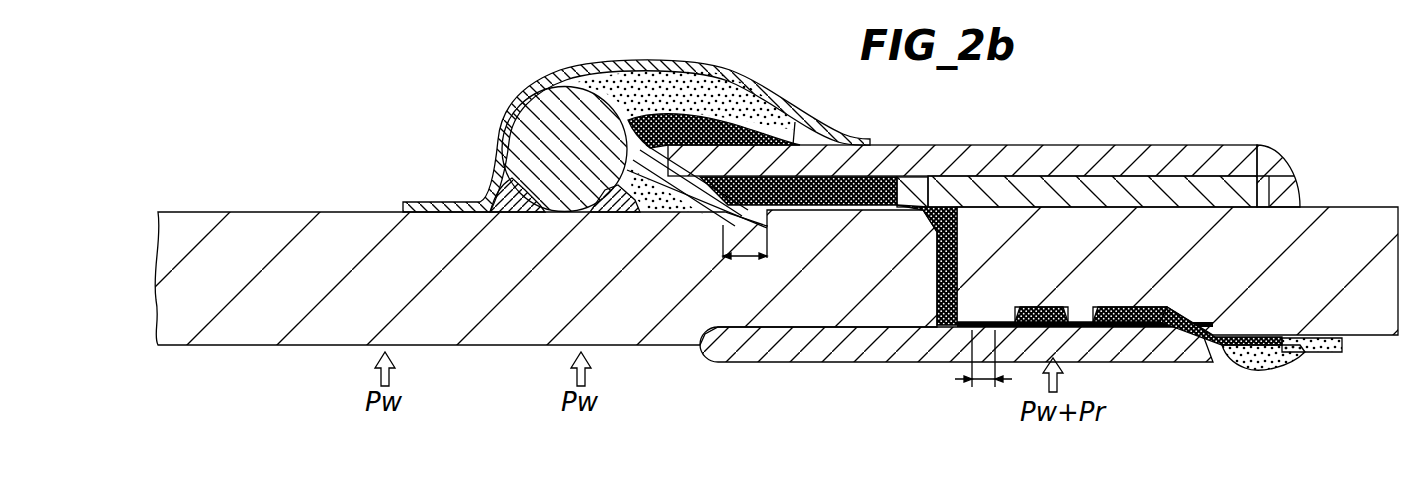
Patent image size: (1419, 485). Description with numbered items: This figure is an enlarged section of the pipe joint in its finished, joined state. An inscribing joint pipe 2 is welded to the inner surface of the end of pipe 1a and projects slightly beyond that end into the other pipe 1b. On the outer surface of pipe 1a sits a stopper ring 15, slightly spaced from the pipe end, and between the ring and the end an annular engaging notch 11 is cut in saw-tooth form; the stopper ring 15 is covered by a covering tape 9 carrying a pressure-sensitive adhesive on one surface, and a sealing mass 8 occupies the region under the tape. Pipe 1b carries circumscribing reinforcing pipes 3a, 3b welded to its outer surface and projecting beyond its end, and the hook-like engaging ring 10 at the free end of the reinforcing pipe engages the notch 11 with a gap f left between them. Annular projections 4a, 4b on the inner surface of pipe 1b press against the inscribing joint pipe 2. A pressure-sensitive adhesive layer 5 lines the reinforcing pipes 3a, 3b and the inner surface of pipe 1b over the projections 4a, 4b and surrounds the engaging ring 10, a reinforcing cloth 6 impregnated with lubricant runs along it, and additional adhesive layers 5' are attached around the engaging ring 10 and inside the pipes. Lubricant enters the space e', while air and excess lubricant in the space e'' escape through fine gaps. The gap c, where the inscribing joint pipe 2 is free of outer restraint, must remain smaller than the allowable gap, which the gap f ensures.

The pipe 1a is at (343, 212).
The pipe 1b is at (1350, 207).
The inscribing joint pipe 2 is at (820, 345).
The circumscribing reinforcing pipe 3a is at (1005, 160).
The circumscribing reinforcing pipe 3b is at (1070, 190).
The annular projection 4a is at (1005, 306).
The annular projection 4b is at (1093, 306).
The pressure-sensitive adhesive layer 5 is at (1263, 378).
The additional adhesive layer 5' is at (1323, 374).
The reinforcing cloth 6 is at (1137, 327).
The sealing resin 8 is at (750, 96).
The covering tape 9 is at (687, 72).
The engaging ring 10 is at (700, 214).
The annular engaging notch 11 is at (770, 214).
The stopper ring 15 is at (516, 113).
The space e' is at (792, 199).
The space e'' is at (662, 210).
The gap f is at (745, 256).
The gap c is at (983, 364).